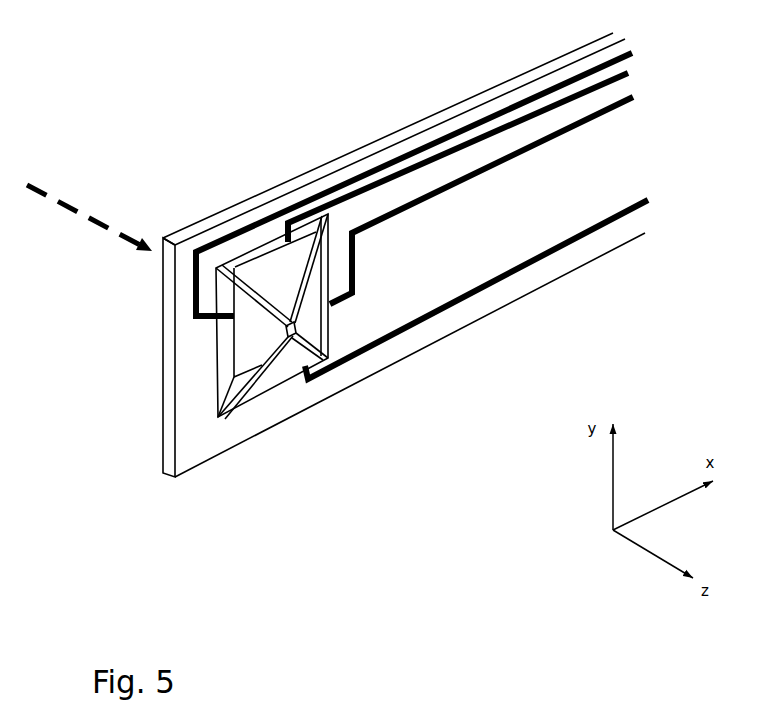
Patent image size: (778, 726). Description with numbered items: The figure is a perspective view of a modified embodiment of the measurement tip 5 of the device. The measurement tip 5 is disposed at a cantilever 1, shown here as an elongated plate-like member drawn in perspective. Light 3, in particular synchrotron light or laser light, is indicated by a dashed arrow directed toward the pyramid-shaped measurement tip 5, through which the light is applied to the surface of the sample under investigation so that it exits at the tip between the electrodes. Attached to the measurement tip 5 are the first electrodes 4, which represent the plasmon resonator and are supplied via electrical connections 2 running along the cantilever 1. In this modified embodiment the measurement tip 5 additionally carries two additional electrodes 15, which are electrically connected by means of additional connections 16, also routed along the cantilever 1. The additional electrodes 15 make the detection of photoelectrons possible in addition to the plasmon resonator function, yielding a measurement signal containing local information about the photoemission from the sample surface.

The cantilever 1 is at (617, 252).
The electrical connections 2 is at (635, 96).
The light 3 is at (89, 203).
The electrodes 4 is at (228, 344).
The measurement tip 5 is at (209, 398).
The additional electrodes 15 is at (275, 382).
The additional connections 16 is at (650, 201).